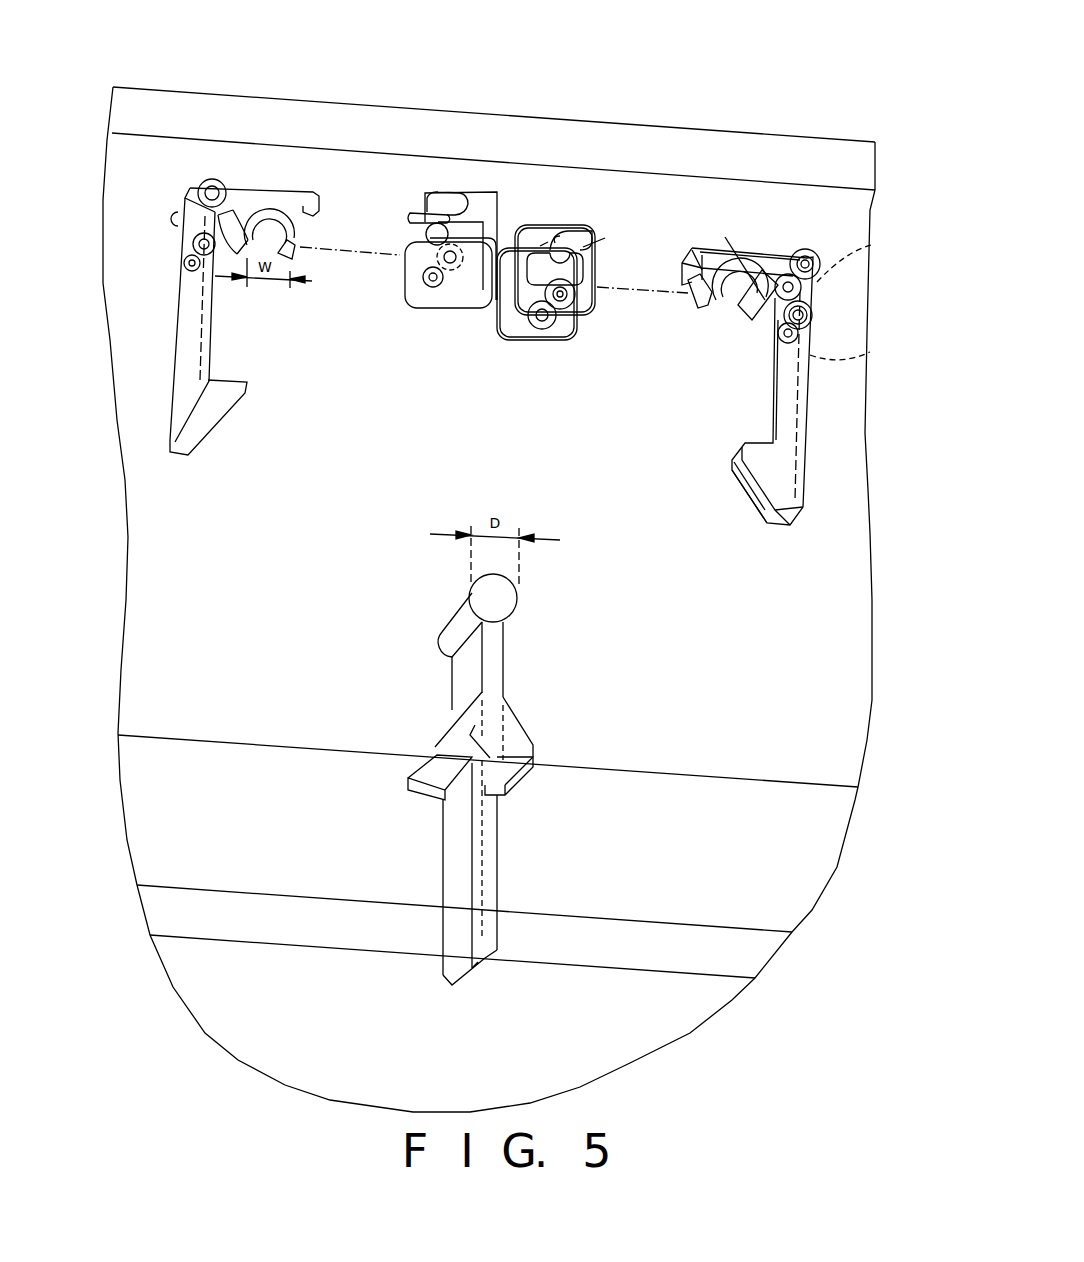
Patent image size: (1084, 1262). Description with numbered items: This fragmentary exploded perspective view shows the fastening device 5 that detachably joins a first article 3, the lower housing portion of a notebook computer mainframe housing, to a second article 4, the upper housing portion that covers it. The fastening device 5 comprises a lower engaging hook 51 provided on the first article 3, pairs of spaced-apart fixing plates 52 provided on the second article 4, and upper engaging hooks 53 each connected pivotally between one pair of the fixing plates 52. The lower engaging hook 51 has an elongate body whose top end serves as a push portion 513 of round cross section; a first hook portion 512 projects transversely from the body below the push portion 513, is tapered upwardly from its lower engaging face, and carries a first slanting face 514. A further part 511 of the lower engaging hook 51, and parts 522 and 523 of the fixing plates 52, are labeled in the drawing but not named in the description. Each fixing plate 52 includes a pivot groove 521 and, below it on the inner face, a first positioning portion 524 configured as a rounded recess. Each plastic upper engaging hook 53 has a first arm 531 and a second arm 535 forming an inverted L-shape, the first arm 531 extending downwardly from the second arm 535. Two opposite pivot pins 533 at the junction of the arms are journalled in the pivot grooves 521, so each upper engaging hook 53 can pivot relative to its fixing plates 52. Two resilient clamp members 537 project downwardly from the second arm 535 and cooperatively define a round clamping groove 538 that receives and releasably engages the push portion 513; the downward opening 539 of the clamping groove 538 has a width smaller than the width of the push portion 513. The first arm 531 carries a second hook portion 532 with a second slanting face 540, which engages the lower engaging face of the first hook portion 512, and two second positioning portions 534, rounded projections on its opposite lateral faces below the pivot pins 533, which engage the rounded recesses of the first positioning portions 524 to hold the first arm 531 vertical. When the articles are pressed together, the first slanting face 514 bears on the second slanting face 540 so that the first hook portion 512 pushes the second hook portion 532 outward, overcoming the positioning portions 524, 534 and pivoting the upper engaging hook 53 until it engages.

The first article 3 is at (648, 952).
The second article 4 is at (863, 132).
The fastening device 5 is at (369, 176).
The lower engaging hook 51 is at (460, 779).
The shank 511 is at (466, 860).
The first hook portion 512 is at (440, 750).
The push portion 513 is at (483, 605).
The first slanting face 514 is at (518, 703).
The fixing plate 52 is at (456, 286).
The pivot groove 521 is at (565, 235).
The latch tab 522 is at (542, 243).
The latch recess 523 is at (605, 238).
The first positioning portion 524 is at (580, 297).
The upper engaging hook 53 is at (176, 176).
The first arm 531 is at (790, 391).
The second hook portion 532 is at (760, 457).
The pivot pin 533 is at (807, 262).
The second positioning portion 534 is at (807, 323).
The second arm 535 is at (771, 243).
The resilient clamp member 537 is at (727, 237).
The clamping groove 538 is at (272, 214).
The downward opening 539 is at (280, 252).
The second slanting face 540 is at (750, 487).